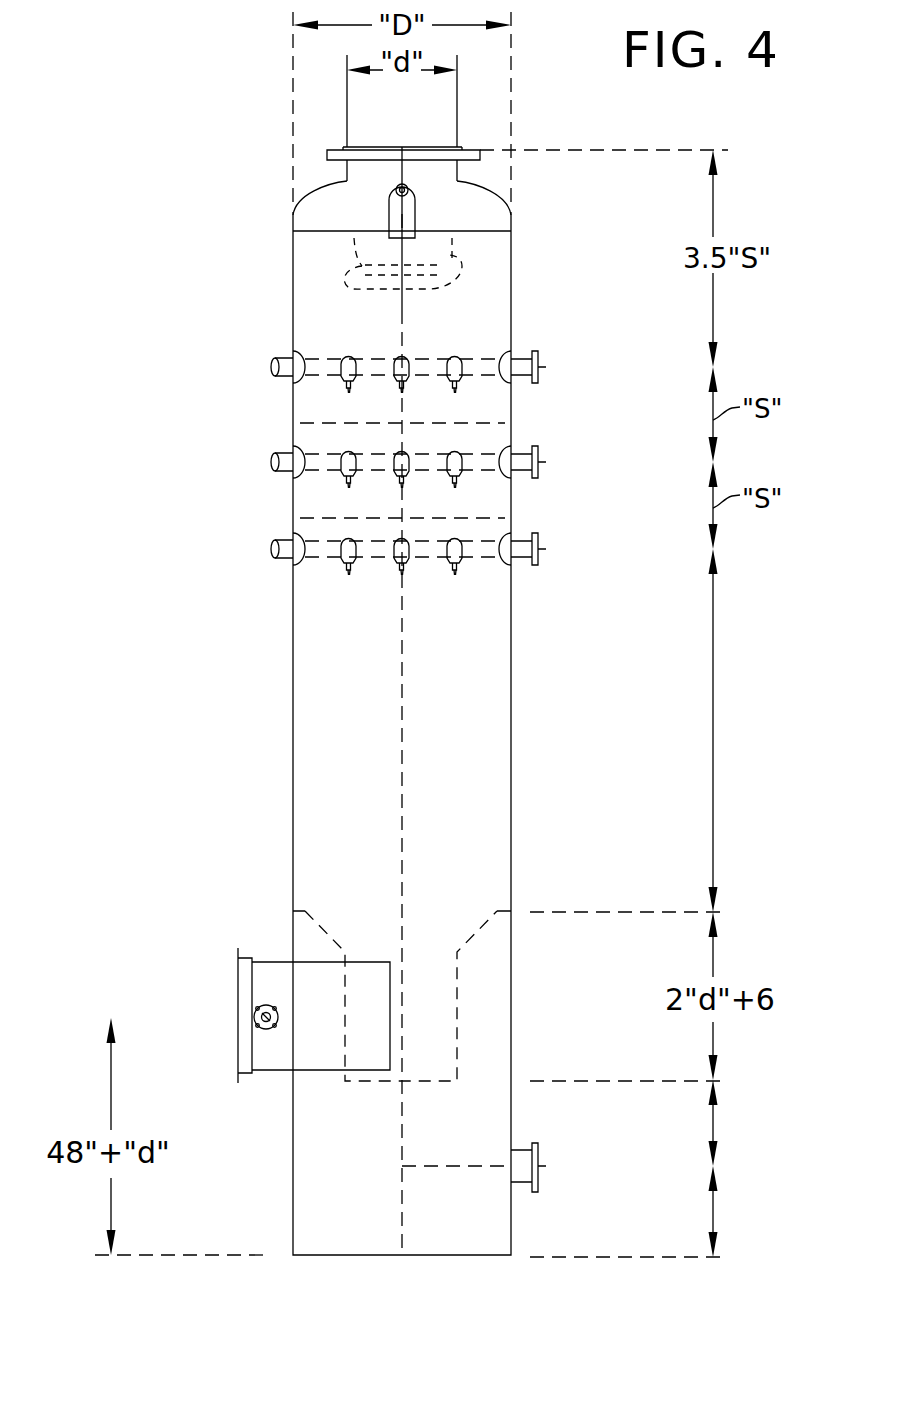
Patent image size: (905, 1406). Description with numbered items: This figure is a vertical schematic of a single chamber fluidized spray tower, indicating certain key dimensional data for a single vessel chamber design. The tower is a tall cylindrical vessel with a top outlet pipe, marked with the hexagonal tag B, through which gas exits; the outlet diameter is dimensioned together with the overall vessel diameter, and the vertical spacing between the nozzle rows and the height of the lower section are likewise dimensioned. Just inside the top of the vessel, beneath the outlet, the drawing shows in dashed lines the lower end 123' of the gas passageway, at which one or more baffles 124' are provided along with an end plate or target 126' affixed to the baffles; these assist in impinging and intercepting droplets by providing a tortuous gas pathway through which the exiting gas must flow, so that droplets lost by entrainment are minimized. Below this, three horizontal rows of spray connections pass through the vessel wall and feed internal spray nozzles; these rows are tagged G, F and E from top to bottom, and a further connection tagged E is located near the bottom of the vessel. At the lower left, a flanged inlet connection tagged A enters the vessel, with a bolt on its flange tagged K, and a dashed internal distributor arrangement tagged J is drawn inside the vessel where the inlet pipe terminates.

The lower end of the second gas passageway 123' is at (477, 248).
The baffle 124' is at (509, 264).
The end plate or target 126' is at (466, 278).
The top outlet nozzle B is at (402, 82).
The upper spray nozzle row G is at (728, 367).
The middle spray nozzle row F is at (728, 462).
The lower spray nozzle / drain nozzle E is at (728, 549).
The inlet distributor internals J is at (377, 1081).
The inlet nozzle A is at (293, 1018).
The inlet flange bolt K is at (266, 1004).